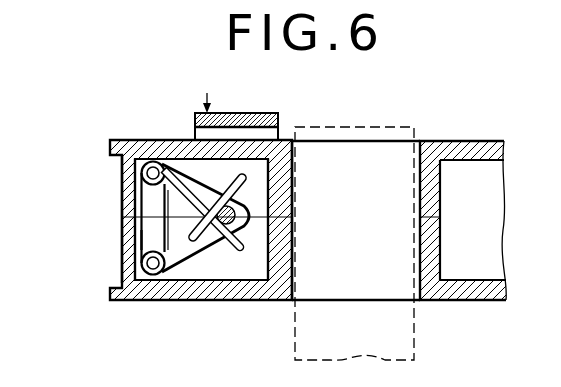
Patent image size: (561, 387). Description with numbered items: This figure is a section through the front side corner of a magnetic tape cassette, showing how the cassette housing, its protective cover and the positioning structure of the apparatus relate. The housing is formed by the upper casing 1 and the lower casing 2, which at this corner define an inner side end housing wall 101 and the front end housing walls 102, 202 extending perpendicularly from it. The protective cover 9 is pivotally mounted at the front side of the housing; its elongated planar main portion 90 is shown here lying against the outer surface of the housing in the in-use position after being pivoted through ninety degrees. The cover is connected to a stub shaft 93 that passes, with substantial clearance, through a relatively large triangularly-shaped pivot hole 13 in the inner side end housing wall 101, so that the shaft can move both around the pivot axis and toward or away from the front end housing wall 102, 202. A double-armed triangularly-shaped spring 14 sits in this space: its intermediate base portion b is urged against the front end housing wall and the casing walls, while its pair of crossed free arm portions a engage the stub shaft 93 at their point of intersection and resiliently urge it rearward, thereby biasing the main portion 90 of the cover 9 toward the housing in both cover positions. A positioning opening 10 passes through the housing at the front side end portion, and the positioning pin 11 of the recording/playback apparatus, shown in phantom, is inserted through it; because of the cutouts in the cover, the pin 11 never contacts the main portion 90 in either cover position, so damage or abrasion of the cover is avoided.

The upper casing 1 is at (178, 140).
The protective cover 9 is at (206, 93).
The main portion 90 is at (243, 113).
The stub shaft 93 is at (290, 153).
The positioning pin 11 is at (413, 125).
The inner side end housing wall 101 is at (122, 178).
The pivot hole 13 is at (175, 203).
The spring 14 is at (145, 227).
The base portion b is at (143, 237).
The front end housing wall 202 is at (132, 255).
The front end housing wall 102 is at (262, 200).
The lower casing 2 is at (266, 288).
The positioning opening 10 is at (398, 283).
The free arm portion a is at (202, 236).